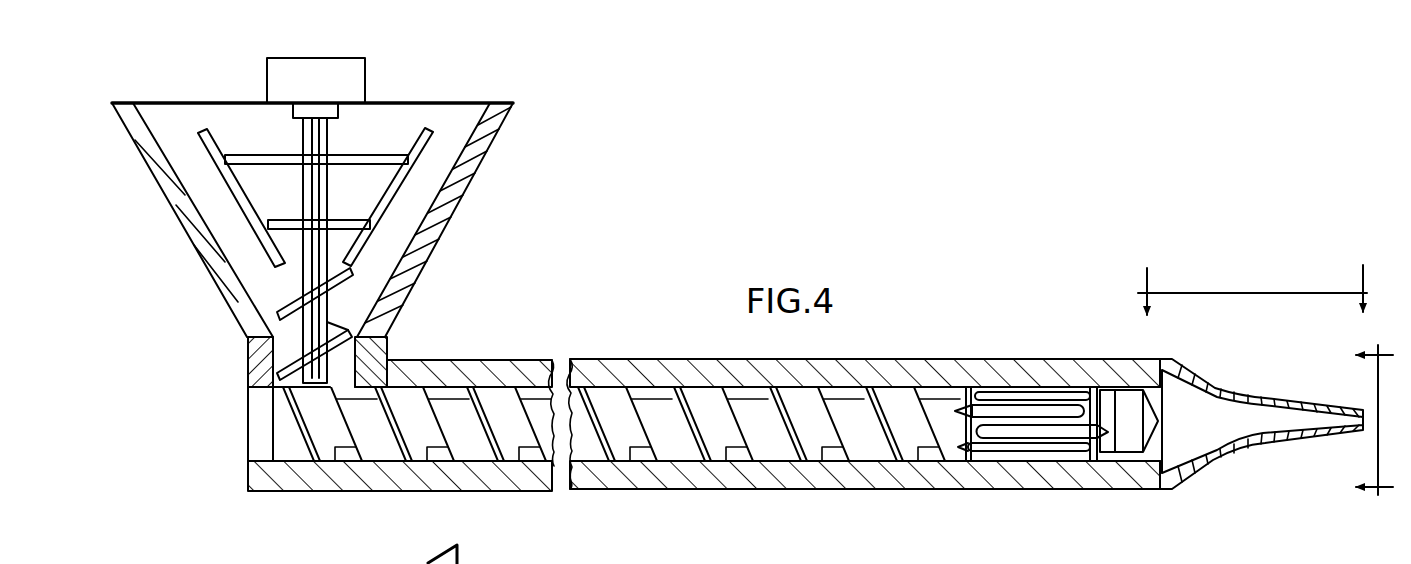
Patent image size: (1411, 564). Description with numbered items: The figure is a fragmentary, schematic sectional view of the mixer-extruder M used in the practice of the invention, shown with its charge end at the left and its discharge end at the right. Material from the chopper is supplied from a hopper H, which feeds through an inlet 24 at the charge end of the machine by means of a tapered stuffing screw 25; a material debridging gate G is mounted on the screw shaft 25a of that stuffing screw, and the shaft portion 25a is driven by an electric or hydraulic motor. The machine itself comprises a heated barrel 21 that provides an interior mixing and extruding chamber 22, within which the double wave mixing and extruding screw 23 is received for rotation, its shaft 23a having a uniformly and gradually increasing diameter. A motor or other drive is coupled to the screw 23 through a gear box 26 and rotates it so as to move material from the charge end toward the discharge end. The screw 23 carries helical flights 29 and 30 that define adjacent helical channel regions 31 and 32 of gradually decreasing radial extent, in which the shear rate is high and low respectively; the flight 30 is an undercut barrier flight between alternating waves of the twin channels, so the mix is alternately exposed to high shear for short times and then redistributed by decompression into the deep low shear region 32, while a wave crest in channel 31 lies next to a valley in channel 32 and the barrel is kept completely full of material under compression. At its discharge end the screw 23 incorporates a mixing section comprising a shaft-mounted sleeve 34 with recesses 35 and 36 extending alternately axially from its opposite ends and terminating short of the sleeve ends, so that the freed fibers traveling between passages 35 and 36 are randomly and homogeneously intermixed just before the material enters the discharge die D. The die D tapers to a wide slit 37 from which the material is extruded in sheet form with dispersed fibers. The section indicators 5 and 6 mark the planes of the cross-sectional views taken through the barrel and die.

The hopper H is at (450, 233).
The screw shaft 25a is at (330, 142).
The material debridging gate G is at (355, 217).
The tapered stuffing screw 25 is at (348, 292).
The inlet 24 is at (388, 347).
The gear box 26 is at (253, 413).
The shaft 23a is at (282, 432).
The helical channel region 31 is at (592, 385).
The helical channel region 32 is at (648, 392).
The mixing and extruding chamber 22 is at (748, 456).
The double wave mixing and extruding screw 23 is at (836, 460).
The helical flight 30 is at (637, 433).
The helical flight 29 is at (697, 440).
The heated barrel 21 is at (858, 493).
The mixer-extruder M is at (919, 353).
The shaft-mounted sleeve 34 is at (980, 386).
The recess 36 is at (1018, 403).
The recess 35 is at (1053, 388).
The discharge die D is at (1258, 380).
The wide slit 37 is at (1345, 414).
The section line 5- 5 is at (1253, 276).
The section line 6- 6 is at (1363, 422).